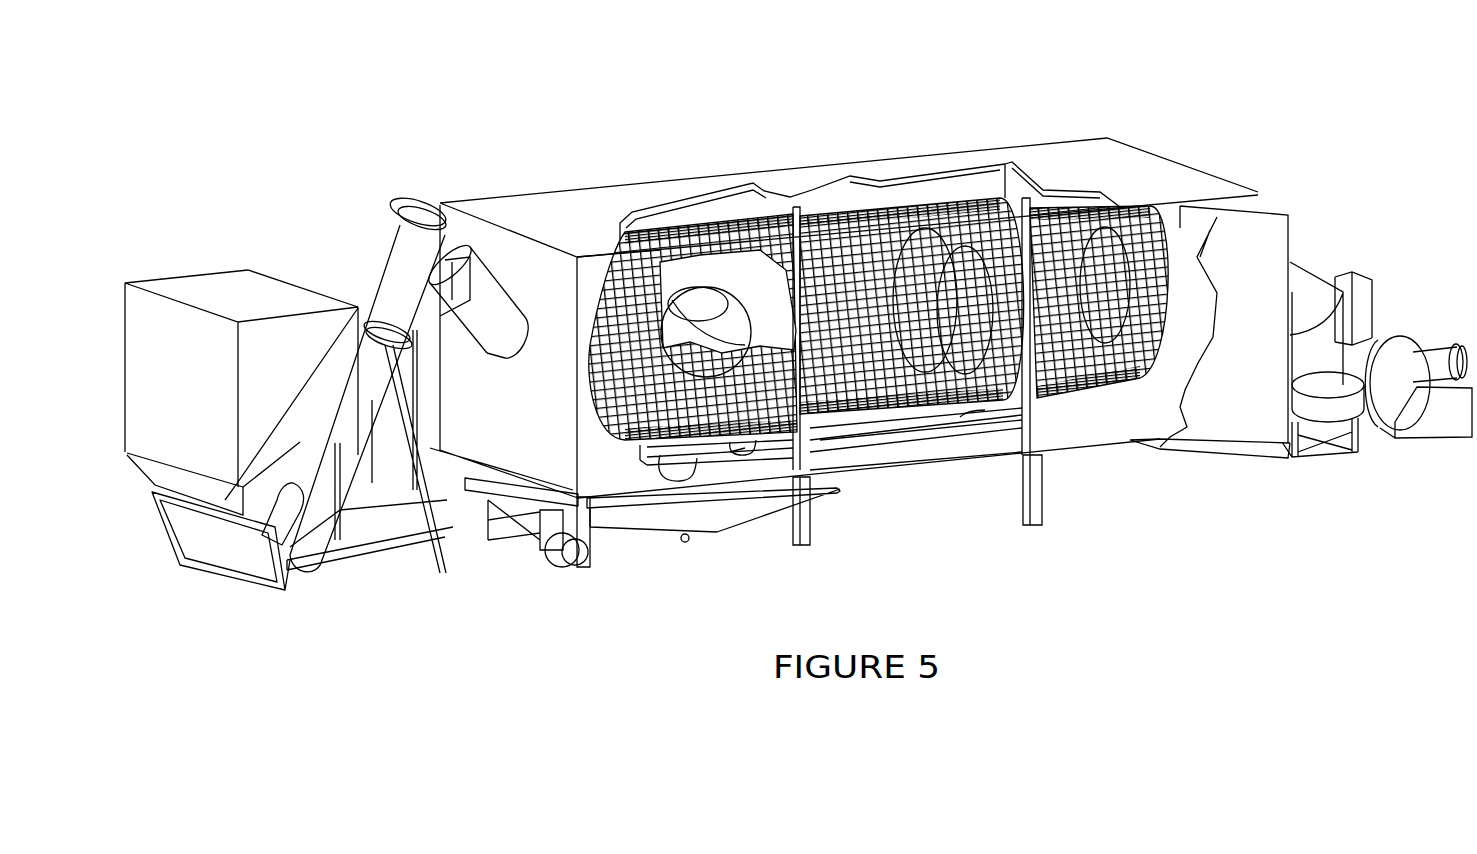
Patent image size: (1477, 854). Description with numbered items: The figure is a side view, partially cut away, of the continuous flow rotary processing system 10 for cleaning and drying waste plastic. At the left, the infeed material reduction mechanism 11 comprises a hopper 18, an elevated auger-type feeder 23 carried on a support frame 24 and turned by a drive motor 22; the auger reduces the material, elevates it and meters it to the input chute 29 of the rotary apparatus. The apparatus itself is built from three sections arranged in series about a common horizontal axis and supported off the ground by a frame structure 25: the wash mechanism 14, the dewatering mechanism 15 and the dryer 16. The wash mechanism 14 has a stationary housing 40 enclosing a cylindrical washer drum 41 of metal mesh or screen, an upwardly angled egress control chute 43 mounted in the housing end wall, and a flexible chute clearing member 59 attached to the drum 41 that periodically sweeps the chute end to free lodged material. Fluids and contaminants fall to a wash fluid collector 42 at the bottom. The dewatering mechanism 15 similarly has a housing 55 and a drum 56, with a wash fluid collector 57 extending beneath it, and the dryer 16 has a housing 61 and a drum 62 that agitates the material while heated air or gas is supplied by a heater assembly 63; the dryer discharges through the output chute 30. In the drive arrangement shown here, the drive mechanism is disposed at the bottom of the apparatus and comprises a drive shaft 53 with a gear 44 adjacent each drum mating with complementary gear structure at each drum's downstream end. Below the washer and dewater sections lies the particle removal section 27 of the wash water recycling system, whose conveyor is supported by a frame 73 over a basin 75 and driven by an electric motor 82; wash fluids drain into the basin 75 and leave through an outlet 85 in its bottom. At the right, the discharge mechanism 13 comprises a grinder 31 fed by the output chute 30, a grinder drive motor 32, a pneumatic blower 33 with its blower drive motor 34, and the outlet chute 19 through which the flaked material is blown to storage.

The continuous flow rotary processing system 10 is at (575, 112).
The infeed material reduction mechanism 11 is at (241, 372).
The discharge mechanism 13 is at (1377, 308).
The wash mechanism 14 is at (529, 184).
The dewatering mechanism 15 is at (879, 259).
The dryer 16 is at (1138, 128).
The hopper 18 is at (178, 287).
The outlet chute 19 is at (1362, 275).
The drive motor 22 is at (288, 495).
The auger-type feeder 23 is at (386, 263).
The support frame 24 is at (352, 562).
The frame structure 25 is at (812, 525).
The particle removal section 27 is at (652, 576).
The input chute 29 is at (485, 350).
The output chute 30 is at (1312, 288).
The grinder 31 is at (1328, 408).
The grinder drive motor 32 is at (1315, 433).
The pneumatic blower 33 is at (1375, 432).
The blower drive motor 34 is at (1430, 360).
The housing 40 is at (693, 285).
The washer drum 41 is at (760, 262).
The wash fluid collector 42 is at (745, 448).
The egress control chute 43 is at (730, 334).
The gear 44 is at (975, 418).
The drive shaft 53 is at (662, 485).
The housing 55 is at (820, 203).
The drum 56 is at (919, 204).
The wash fluid collector 57 is at (960, 428).
The chute clearing member 59 is at (680, 279).
The housing 61 is at (1018, 184).
The drum 62 is at (1092, 206).
The heater assembly 63 is at (1208, 447).
The frame 73 is at (490, 540).
The basin 75 is at (715, 535).
The electric motor 82 is at (555, 555).
The outlet 85 is at (683, 542).